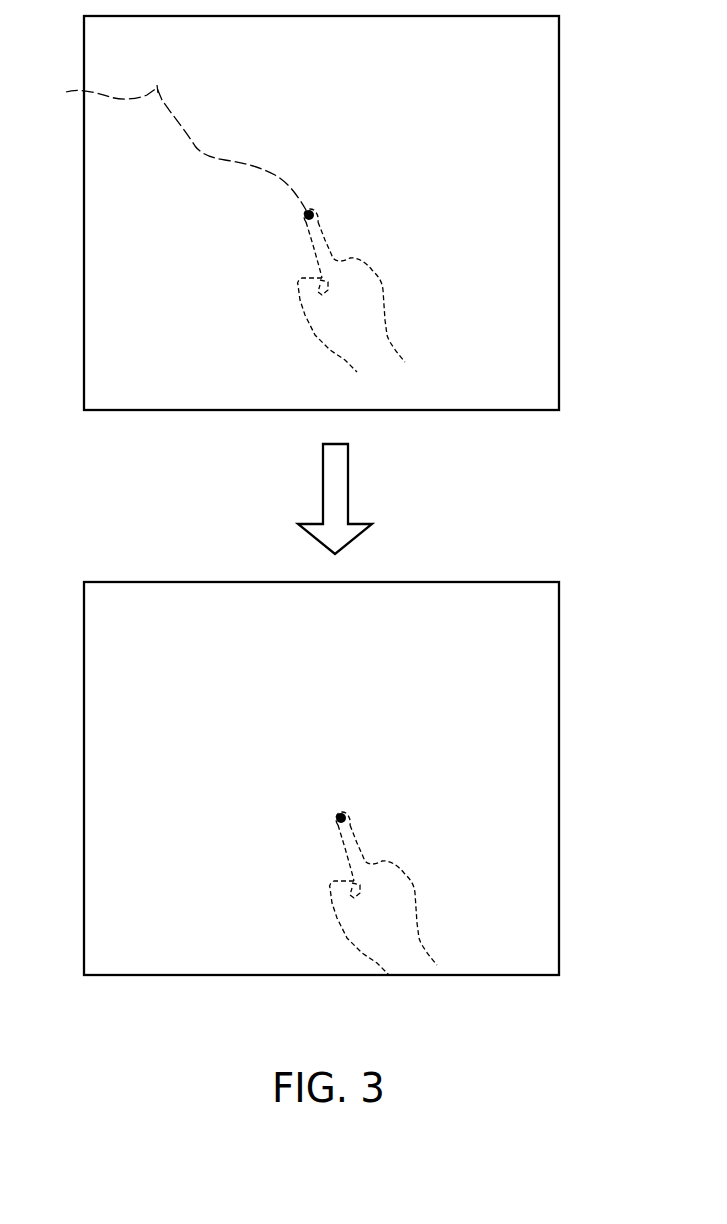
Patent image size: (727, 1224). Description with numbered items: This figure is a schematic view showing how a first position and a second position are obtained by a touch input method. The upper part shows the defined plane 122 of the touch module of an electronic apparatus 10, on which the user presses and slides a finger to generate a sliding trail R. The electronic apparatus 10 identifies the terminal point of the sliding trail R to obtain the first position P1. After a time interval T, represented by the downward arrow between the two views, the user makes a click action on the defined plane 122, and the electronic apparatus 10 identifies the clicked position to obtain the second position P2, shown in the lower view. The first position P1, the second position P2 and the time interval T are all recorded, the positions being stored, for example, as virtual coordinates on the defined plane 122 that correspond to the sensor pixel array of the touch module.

The defined plane 122 is at (559, 213).
The electronic apparatus 10 is at (630, 477).
The sliding trail R is at (177, 142).
The first position P1 is at (316, 213).
The second position P2 is at (347, 817).
The time interval T is at (348, 491).